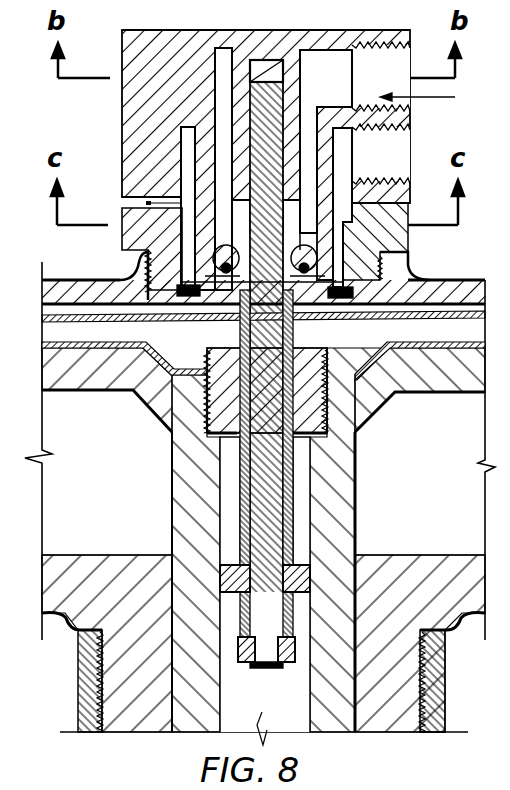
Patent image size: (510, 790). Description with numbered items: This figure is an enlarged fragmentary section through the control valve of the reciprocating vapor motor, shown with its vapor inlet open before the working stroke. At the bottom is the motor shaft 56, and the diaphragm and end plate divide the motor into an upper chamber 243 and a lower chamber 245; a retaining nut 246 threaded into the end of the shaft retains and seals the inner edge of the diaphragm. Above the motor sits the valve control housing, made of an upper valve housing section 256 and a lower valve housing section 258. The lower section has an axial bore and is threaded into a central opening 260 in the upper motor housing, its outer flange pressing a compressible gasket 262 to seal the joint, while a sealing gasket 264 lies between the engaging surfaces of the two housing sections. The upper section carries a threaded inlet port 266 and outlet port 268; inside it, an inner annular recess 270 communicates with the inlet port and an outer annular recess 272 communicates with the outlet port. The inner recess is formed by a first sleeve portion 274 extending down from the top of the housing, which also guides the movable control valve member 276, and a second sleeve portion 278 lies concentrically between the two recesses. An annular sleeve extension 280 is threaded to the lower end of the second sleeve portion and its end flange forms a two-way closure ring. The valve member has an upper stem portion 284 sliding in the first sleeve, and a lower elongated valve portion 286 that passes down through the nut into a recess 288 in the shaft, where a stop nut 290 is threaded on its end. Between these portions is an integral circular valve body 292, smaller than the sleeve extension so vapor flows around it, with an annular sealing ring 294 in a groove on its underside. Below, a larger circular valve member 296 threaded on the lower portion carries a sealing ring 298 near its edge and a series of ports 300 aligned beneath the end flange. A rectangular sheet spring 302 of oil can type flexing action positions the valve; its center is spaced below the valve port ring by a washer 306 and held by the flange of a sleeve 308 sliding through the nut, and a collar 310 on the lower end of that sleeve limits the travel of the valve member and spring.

The motor shaft 56 is at (395, 722).
The upper chamber 243 is at (473, 343).
The lower chamber 245 is at (442, 505).
The retaining nut 246 is at (343, 370).
The upper valve housing section 256 is at (190, 83).
The lower valve housing section 258 is at (410, 243).
The central opening 260 is at (412, 279).
The compressible gasket 262 is at (130, 258).
The sealing gasket 264 is at (147, 203).
The inlet port 266 is at (405, 80).
The outlet port 268 is at (405, 168).
The inner annular recess 270 is at (223, 46).
The outer annular recess 272 is at (186, 168).
The first sleeve portion 274 is at (240, 66).
The movable control valve member 276 is at (268, 62).
The second sleeve portion 278 is at (205, 143).
The annular sleeve extension 280 is at (340, 242).
The upper stem portion 284 is at (278, 127).
The lower elongated valve portion 286 is at (268, 514).
The recess 288 is at (308, 718).
The stop nut 290 is at (240, 652).
The valve body 292 is at (280, 268).
The annular sealing ring 294 is at (187, 317).
The circular valve member 296 is at (350, 307).
The sealing ring 298 is at (168, 268).
The ports 300 is at (186, 331).
The spring 302 is at (110, 322).
The washer 306 is at (345, 310).
The sleeve 308 is at (285, 542).
The collar 310 is at (310, 567).